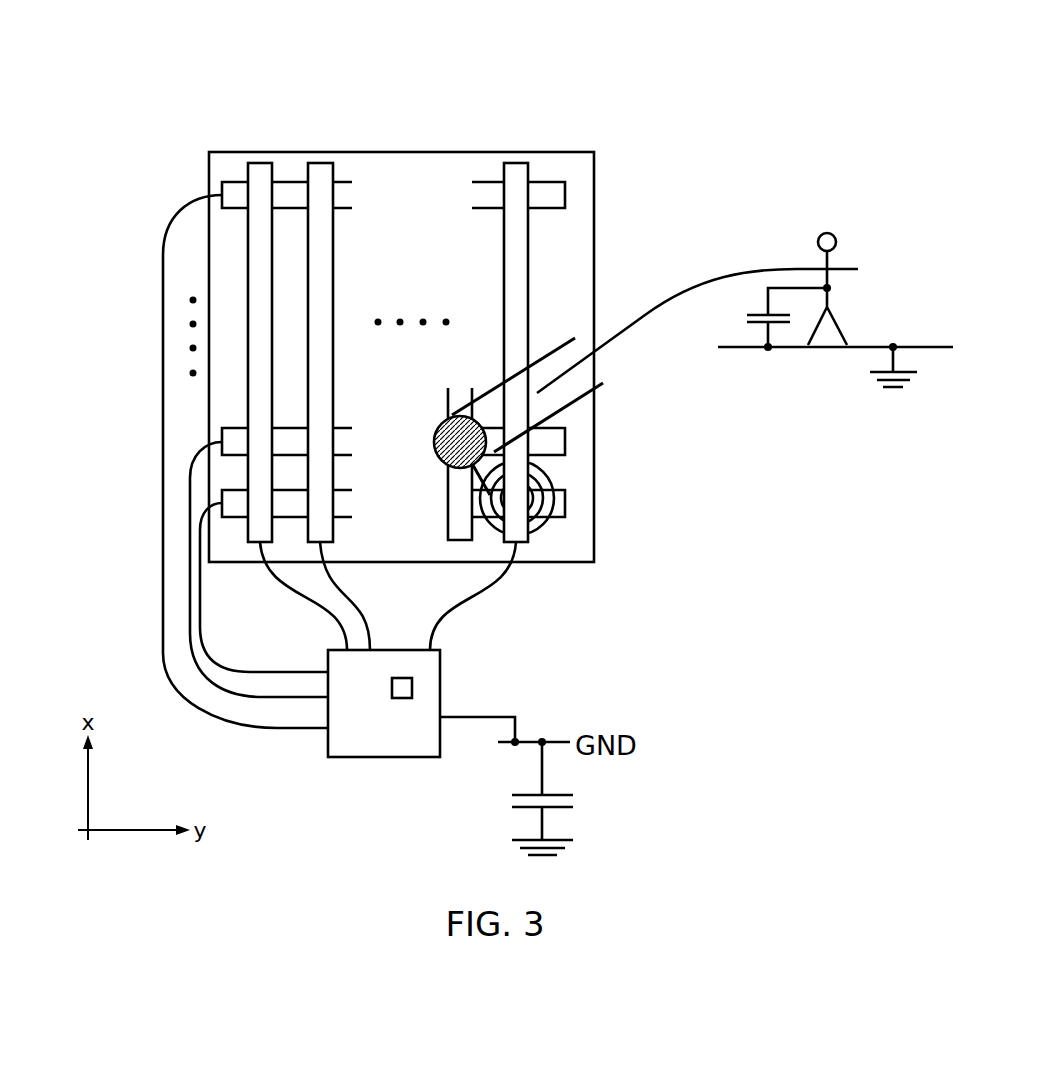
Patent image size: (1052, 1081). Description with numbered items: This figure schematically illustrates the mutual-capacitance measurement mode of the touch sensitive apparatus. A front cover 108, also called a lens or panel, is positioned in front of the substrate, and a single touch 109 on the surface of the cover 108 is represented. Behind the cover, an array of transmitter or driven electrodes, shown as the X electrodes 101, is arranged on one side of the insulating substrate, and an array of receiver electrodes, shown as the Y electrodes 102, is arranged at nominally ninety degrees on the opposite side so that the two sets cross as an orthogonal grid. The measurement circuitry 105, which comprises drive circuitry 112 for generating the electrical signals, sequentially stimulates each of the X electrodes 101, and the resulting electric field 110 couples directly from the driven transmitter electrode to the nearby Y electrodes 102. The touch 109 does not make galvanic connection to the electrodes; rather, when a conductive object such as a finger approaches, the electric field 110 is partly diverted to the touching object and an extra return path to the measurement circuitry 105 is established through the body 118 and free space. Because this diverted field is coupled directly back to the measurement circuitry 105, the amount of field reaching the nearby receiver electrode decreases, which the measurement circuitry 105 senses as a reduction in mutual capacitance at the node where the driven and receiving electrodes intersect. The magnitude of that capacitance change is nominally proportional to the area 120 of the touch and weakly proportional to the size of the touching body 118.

The X electrodes 101 is at (124, 187).
The Y electrodes 102 is at (518, 107).
The measurement circuitry 105 is at (375, 757).
The front cover 108 is at (597, 165).
The touch 109 is at (465, 468).
The electric field 110 is at (535, 530).
The drive circuitry 112 is at (412, 688).
The body 118 is at (838, 260).
The area of the touch 120 is at (438, 420).